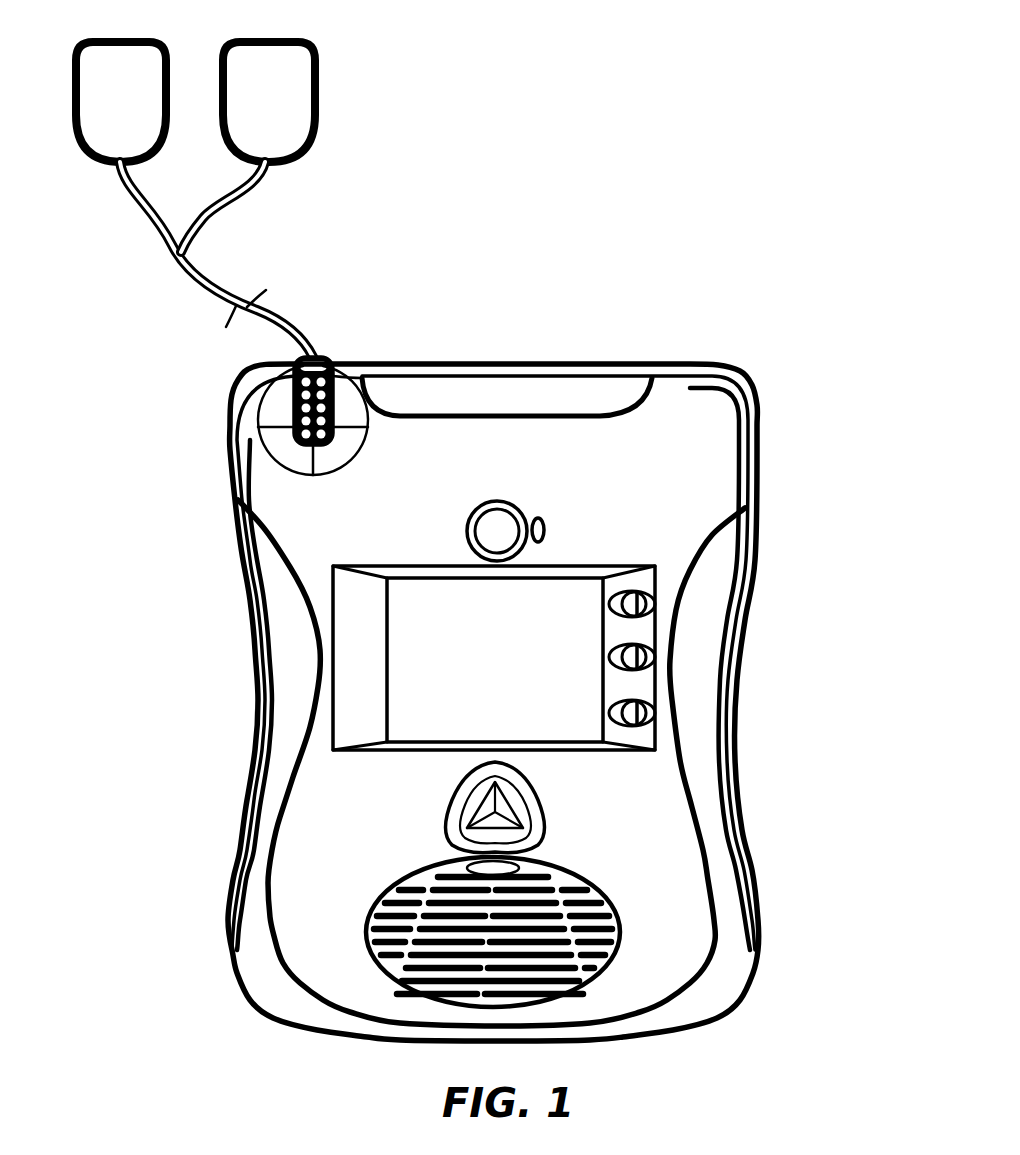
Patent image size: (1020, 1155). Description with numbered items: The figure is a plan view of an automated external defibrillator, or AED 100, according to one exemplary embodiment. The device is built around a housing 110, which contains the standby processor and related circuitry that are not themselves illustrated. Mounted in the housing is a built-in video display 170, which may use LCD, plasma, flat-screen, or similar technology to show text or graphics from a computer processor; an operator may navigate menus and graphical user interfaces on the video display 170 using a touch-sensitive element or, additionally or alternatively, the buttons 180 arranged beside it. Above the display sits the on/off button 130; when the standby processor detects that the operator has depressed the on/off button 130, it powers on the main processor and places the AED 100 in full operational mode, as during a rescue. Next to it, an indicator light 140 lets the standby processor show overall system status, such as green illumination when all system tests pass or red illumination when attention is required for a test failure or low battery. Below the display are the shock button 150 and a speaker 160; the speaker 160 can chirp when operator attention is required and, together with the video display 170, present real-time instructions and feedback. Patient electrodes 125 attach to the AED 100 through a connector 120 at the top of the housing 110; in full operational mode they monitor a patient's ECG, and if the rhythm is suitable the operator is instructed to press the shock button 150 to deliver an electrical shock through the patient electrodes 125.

The AED 100 is at (582, 210).
The housing 110 is at (757, 425).
The connector 120 is at (348, 322).
The patient electrodes 125 is at (94, 114).
The on/off button 130 is at (497, 533).
The indicator light 140 is at (538, 519).
The shock button 150 is at (507, 800).
The speaker 160 is at (605, 915).
The video display 170 is at (475, 664).
The buttons 180 is at (656, 606).